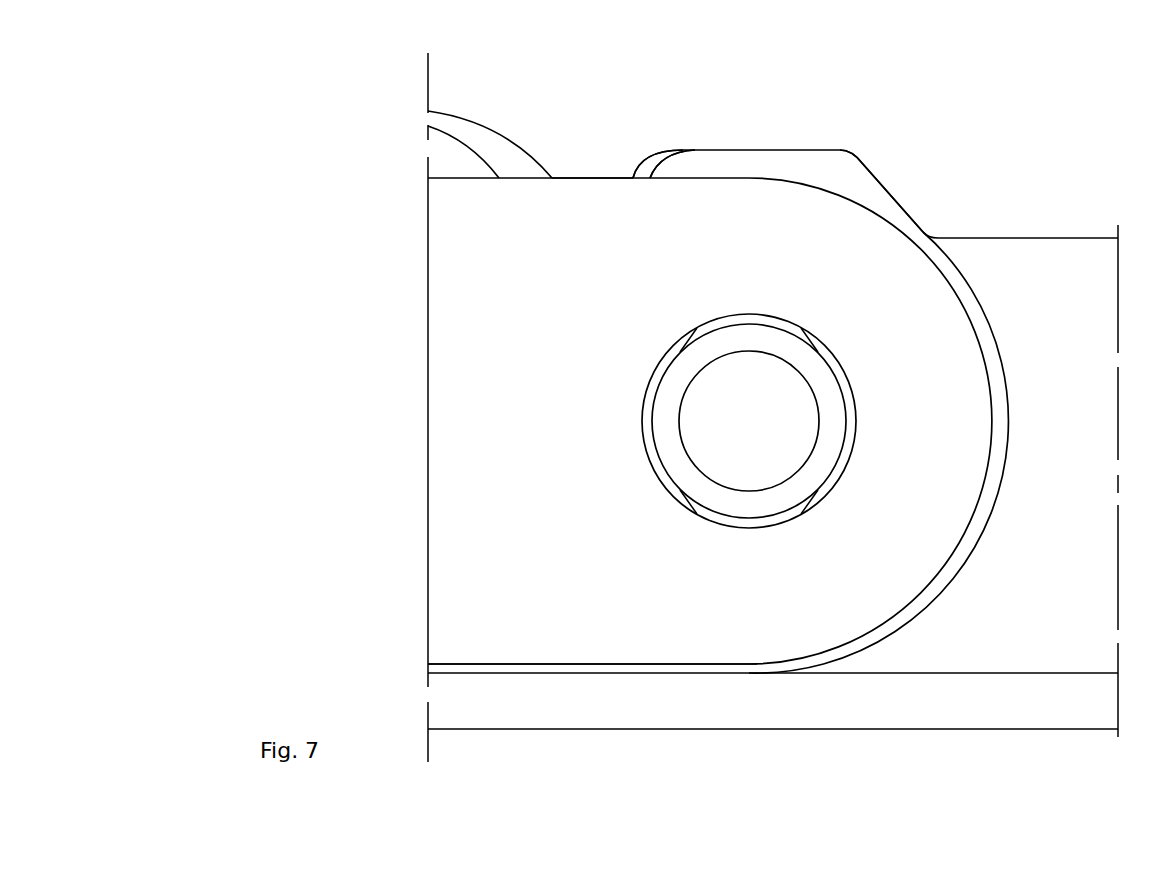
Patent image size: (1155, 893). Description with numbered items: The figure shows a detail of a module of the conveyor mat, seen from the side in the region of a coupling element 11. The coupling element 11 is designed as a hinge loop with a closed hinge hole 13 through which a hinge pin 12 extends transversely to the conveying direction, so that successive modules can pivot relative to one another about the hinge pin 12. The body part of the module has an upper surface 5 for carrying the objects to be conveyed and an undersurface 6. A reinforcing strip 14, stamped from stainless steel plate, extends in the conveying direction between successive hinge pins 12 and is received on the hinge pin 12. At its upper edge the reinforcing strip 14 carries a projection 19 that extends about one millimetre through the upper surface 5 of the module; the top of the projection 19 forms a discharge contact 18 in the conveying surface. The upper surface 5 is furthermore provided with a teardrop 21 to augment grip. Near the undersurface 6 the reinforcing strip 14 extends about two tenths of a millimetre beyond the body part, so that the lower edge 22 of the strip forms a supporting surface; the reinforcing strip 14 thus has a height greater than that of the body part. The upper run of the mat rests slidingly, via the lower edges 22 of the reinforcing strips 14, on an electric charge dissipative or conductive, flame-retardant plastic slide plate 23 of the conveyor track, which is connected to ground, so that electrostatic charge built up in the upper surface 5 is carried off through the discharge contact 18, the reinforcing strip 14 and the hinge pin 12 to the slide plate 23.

The upper surface 5 is at (591, 177).
The undersurface 6 is at (703, 663).
The coupling element 11 is at (923, 330).
The hinge pin 12 is at (775, 444).
The hinge hole 13 is at (851, 376).
The reinforcing strip 14 is at (1078, 265).
The discharge contact 18 is at (745, 148).
The projection 19 is at (648, 168).
The teardrop 21 is at (497, 152).
The lower edge 22 is at (733, 671).
The slide plate 23 is at (1020, 700).